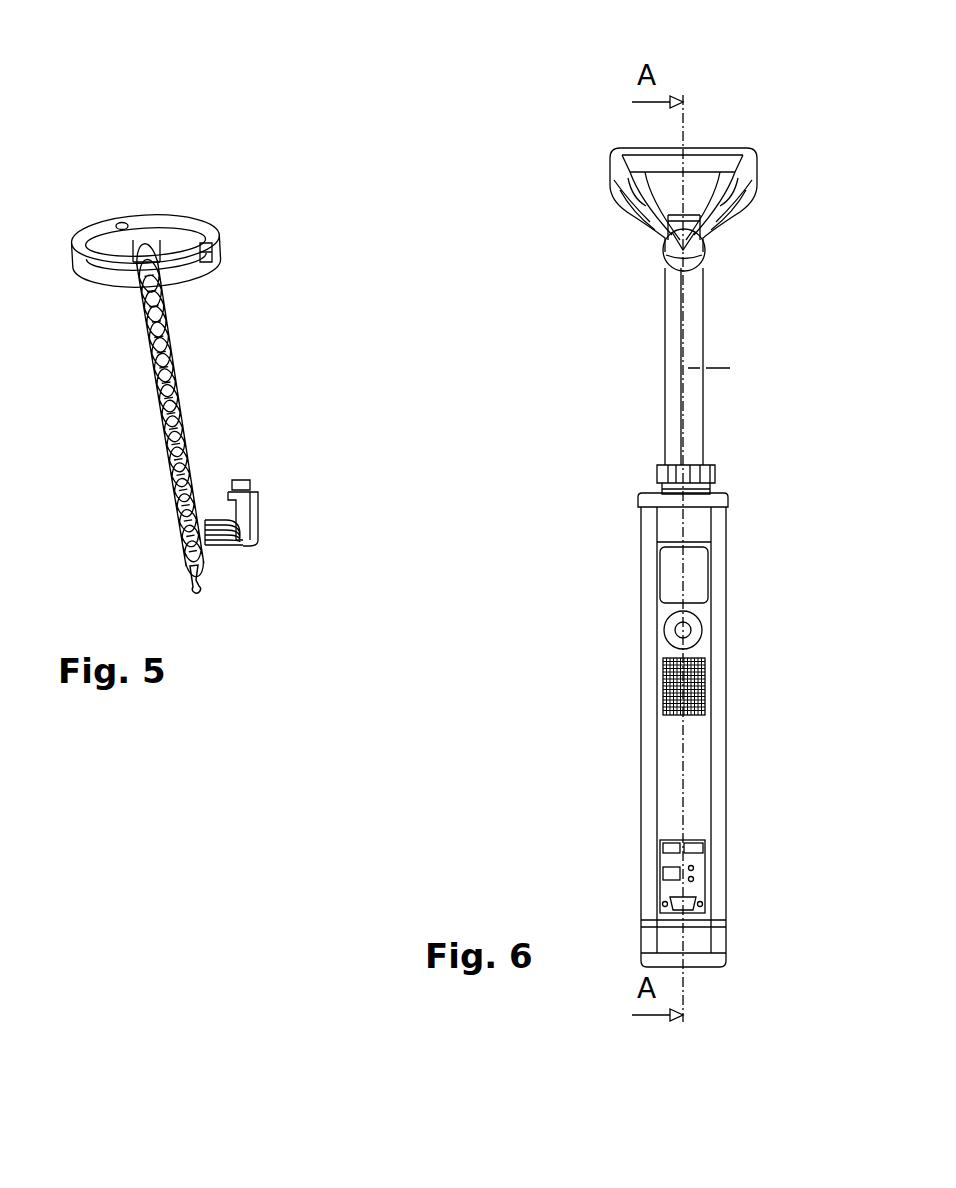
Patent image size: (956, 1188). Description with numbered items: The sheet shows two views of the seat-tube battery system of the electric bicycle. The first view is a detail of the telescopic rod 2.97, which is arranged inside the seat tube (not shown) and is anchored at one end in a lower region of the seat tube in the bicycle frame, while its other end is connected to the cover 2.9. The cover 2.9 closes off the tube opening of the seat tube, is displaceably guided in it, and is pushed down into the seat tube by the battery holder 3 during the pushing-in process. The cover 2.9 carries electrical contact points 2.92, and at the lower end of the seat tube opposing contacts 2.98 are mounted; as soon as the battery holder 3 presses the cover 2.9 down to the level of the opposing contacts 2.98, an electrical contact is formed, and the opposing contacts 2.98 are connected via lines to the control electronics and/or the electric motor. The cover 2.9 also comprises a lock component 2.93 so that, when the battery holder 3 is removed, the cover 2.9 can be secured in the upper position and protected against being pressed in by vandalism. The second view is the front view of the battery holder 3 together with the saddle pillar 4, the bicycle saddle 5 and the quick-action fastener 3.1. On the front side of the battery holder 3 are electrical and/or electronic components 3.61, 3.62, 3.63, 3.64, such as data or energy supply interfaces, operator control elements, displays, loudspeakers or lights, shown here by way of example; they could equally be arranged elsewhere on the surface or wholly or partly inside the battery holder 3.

In FIG. 5, the cover 2.9 is at (178, 218).
In FIG. 5, the electrical contact points 2.92 is at (218, 262).
In FIG. 5, the lock component 2.93 is at (125, 223).
In FIG. 5, the telescopic rod 2.97 is at (180, 385).
In FIG. 5, the opposing contacts 2.98 is at (252, 488).
In FIG. 6, the battery holder 3 is at (643, 703).
In FIG. 6, the quick-action fastener 3.1 is at (658, 474).
In FIG. 6, the electrical and/or electronic component 3.61 is at (698, 581).
In FIG. 6, the electrical and/or electronic component 3.62 is at (703, 634).
In FIG. 6, the electrical and/or electronic component 3.63 is at (703, 690).
In FIG. 6, the electrical and/or electronic component 3.64 is at (698, 848).
In FIG. 6, the saddle pillar 4 is at (678, 405).
In FIG. 6, the bicycle saddle 5 is at (614, 180).